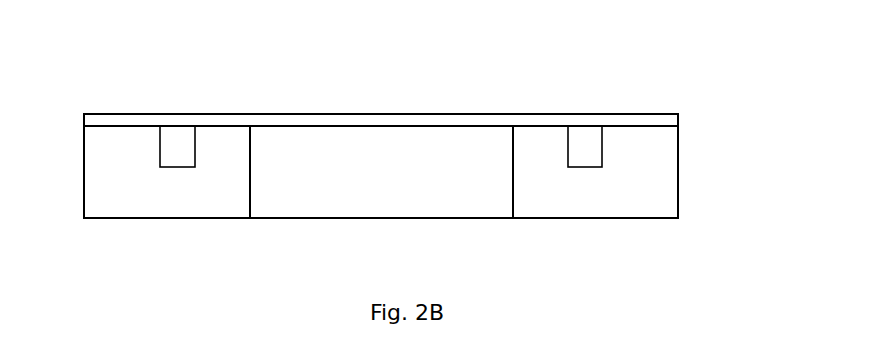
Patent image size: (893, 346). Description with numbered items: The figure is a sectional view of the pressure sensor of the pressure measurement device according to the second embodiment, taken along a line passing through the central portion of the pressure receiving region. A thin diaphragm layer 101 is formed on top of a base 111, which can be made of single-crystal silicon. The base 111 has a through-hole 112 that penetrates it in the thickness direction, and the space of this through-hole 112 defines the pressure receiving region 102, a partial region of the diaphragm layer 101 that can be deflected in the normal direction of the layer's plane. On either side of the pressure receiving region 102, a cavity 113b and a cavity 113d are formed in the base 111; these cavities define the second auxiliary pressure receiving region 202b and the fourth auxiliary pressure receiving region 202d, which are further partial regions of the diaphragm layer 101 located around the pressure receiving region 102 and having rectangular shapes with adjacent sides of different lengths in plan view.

The diaphragm layer 101 is at (678, 118).
The base 111 is at (678, 160).
The through-hole 112 is at (379, 207).
The pressure receiving region 102 is at (250, 105).
The cavity 113b is at (180, 167).
The cavity 113d is at (586, 167).
The second auxiliary pressure receiving region 202b is at (195, 103).
The fourth auxiliary pressure receiving region 202d is at (568, 103).